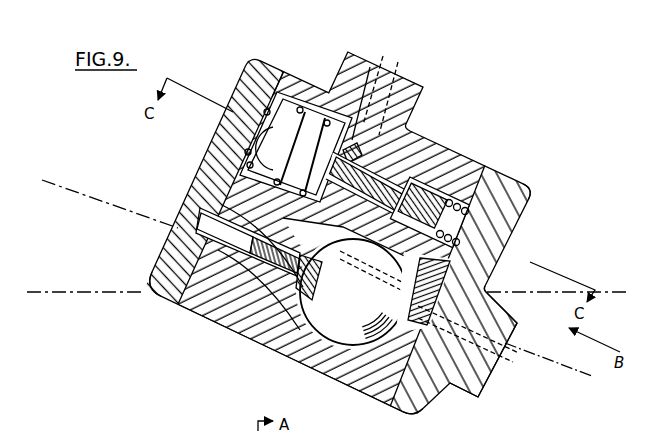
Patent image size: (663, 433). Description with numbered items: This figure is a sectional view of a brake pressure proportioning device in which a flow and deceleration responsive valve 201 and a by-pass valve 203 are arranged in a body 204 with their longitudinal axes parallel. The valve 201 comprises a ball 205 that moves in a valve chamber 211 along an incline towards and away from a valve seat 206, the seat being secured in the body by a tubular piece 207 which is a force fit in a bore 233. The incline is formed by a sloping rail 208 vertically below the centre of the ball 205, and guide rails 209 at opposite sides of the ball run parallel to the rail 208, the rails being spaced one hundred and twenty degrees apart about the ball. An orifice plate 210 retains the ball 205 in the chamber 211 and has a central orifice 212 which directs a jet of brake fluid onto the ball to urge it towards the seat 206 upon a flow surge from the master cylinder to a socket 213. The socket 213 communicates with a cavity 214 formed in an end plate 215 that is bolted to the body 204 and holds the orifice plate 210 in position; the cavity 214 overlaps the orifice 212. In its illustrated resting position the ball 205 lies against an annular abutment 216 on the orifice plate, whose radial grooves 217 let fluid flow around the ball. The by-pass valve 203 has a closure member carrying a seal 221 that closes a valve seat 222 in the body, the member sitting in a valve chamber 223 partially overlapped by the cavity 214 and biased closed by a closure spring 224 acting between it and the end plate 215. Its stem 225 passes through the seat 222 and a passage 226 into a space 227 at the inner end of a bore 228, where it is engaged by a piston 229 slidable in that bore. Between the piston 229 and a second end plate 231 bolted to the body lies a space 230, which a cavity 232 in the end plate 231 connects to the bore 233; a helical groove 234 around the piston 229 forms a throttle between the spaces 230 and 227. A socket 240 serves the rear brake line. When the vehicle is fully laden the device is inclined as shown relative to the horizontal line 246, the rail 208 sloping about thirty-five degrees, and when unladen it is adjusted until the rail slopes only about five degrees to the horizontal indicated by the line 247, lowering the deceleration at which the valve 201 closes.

The flow and deceleration responsive valve 201 is at (254, 342).
The by-pass valve 203 is at (416, 170).
The body 204 is at (283, 105).
The ball 205 is at (306, 365).
The valve seat 206 is at (233, 337).
The tubular piece 207 is at (233, 318).
The sloping rail 208 is at (294, 350).
The guide rails 209 is at (395, 257).
The orifice plate 210 is at (399, 410).
The valve chamber 211 is at (362, 377).
The central orifice 212 is at (440, 383).
The socket 213 is at (488, 362).
The cavity 214 is at (442, 283).
The end plate 215 is at (512, 172).
The annular abutment 216 is at (473, 297).
The radial grooves 217 is at (370, 360).
The seal 221 is at (440, 195).
The valve seat 222 is at (437, 190).
The valve chamber 223 is at (458, 205).
The closure spring 224 is at (525, 191).
The stem 225 is at (412, 176).
The passage 226 is at (398, 170).
The space 227 is at (370, 67).
The bore 228 is at (252, 134).
The piston 229 is at (288, 70).
The space 230 is at (246, 153).
The end plate 231 is at (163, 252).
The cavity 232 is at (188, 191).
The bore 233 is at (186, 304).
The helical groove 234 is at (256, 96).
The socket 240 is at (389, 61).
The horizontal line 246 is at (77, 292).
The horizontal line 247 is at (88, 198).